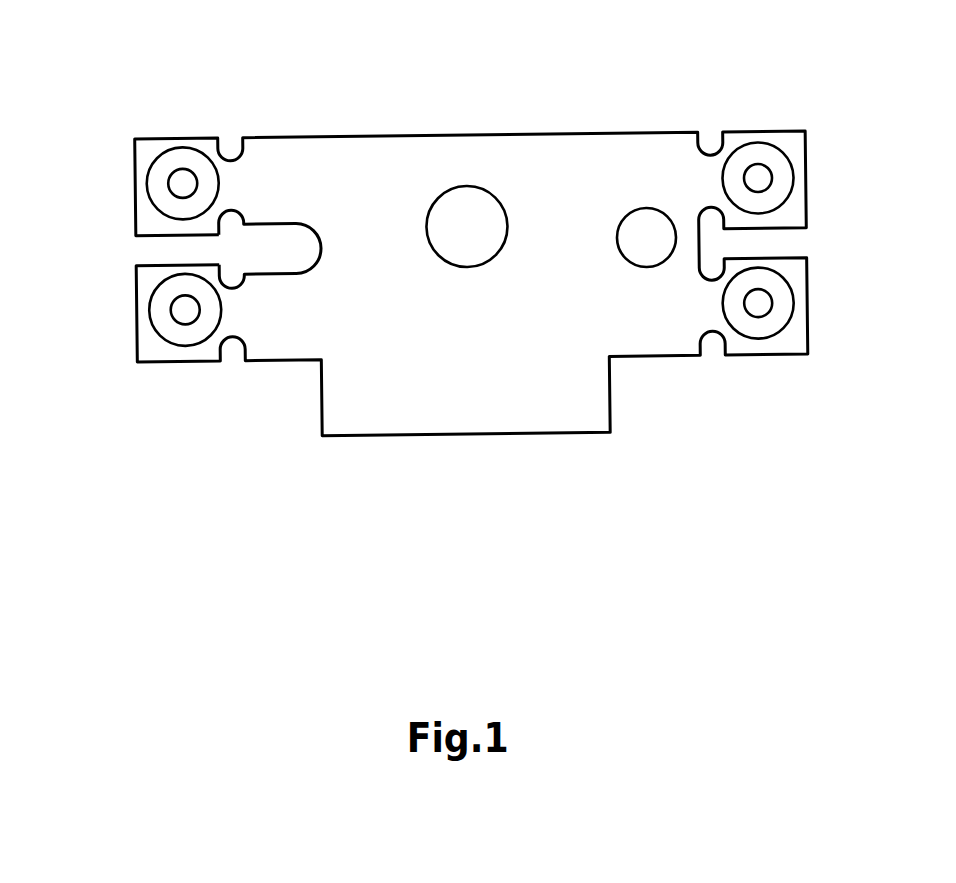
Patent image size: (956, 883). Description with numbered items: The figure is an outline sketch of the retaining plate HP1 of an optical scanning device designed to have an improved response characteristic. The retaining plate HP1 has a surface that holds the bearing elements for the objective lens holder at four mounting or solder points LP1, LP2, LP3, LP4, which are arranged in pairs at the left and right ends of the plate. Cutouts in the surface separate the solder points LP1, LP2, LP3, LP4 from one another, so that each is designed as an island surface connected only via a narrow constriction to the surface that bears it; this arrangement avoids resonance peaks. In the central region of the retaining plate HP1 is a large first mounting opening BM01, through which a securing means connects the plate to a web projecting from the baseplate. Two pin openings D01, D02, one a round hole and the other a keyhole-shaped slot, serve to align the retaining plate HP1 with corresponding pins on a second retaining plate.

The retaining plate HP1 is at (444, 152).
The solder point LP1 is at (172, 172).
The solder point LP2 is at (180, 323).
The solder point LP3 is at (760, 160).
The solder point LP4 is at (765, 313).
The pin opening D01 is at (647, 267).
The pin opening D02 is at (268, 275).
The first mounting opening BM01 is at (470, 268).